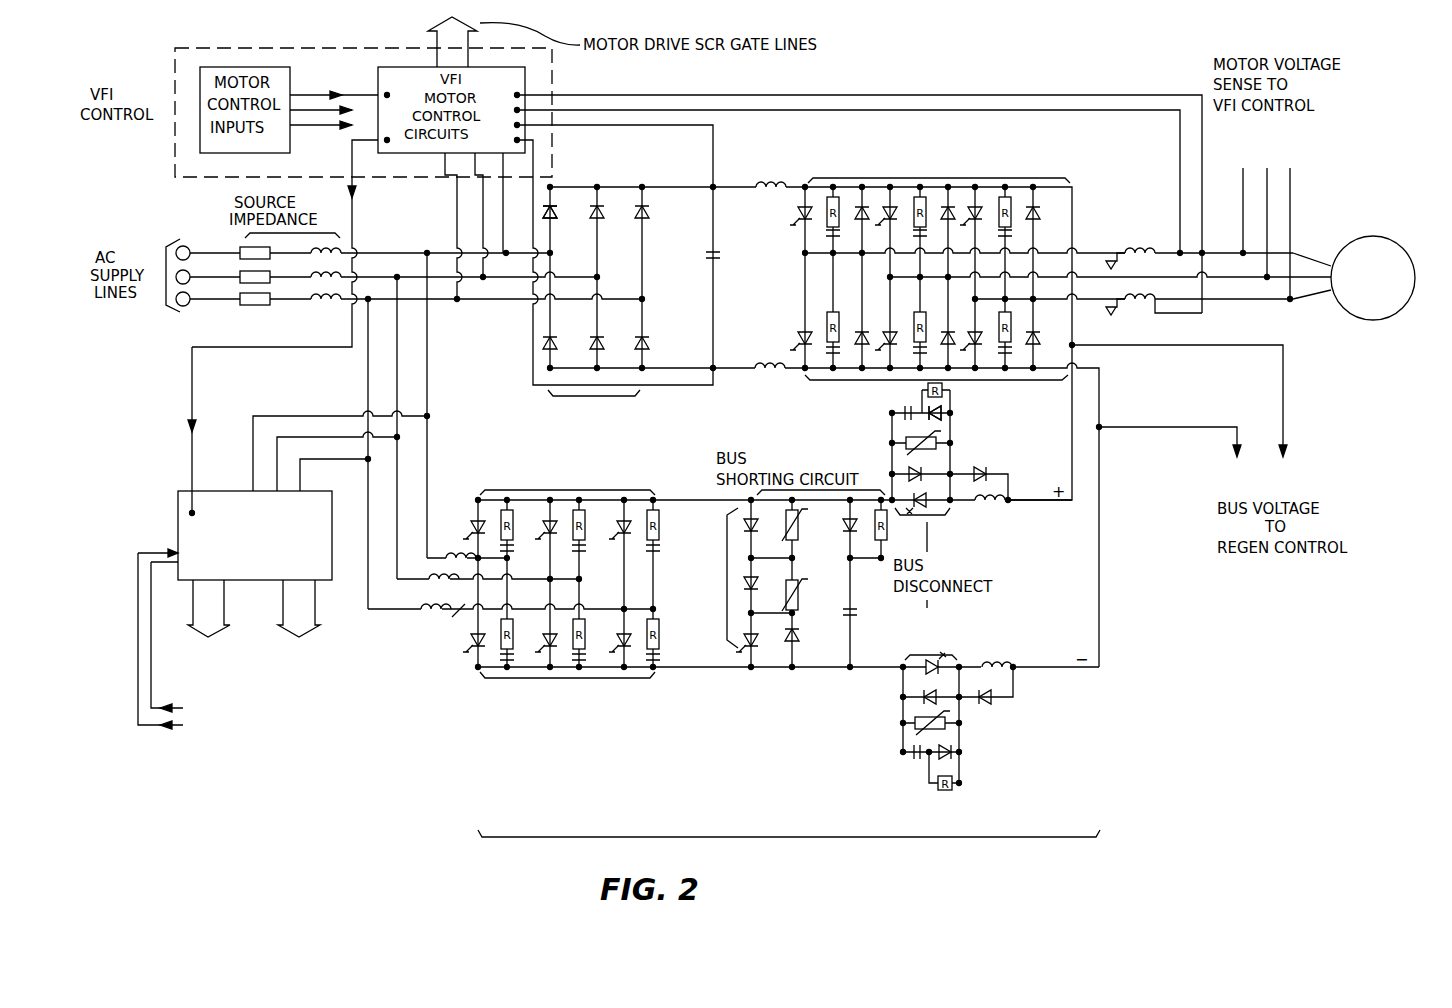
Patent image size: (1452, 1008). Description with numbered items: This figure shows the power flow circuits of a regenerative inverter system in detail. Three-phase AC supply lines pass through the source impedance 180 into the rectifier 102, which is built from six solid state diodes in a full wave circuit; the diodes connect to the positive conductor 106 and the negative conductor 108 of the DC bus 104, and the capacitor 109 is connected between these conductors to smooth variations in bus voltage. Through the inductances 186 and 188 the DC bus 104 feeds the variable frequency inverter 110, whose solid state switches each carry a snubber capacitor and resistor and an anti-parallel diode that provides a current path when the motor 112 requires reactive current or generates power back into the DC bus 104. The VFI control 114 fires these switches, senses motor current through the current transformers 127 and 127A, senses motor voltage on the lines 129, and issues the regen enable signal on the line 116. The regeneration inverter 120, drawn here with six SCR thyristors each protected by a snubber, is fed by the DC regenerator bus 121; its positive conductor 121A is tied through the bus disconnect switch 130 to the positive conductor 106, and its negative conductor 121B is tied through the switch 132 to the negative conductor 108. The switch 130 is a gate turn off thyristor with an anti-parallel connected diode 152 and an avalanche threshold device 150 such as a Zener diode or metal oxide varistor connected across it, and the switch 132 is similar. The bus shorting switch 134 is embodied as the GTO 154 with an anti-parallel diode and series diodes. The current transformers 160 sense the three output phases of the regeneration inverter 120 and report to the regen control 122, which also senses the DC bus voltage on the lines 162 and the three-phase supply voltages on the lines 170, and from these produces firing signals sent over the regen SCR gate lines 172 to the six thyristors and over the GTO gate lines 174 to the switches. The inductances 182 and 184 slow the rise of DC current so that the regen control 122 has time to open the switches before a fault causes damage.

The rectifier 102 is at (595, 421).
The DC bus 104 is at (688, 154).
The positive conductor 106 is at (575, 190).
The negative conductor 108 is at (733, 370).
The capacitor 109 is at (722, 258).
The variable frequency inverter 110 is at (972, 162).
The AC motor 112 is at (1366, 320).
The VFI control 114 is at (174, 148).
The regen enable line 116 is at (193, 388).
The regeneration inverter 120 is at (567, 697).
The DC regenerator bus 121 is at (818, 845).
The positive conductor of regenerator bus 121A is at (682, 669).
The negative conductor of regenerator bus 121B is at (688, 498).
The regen control 122 is at (176, 512).
The current transformer 127 is at (1208, 227).
The current transformer 127A is at (1133, 303).
The motor voltage sense lines 129 is at (1290, 172).
The bus disconnect switch 130 is at (935, 505).
The bus disconnect switch 132 is at (920, 655).
The bus shorting switch 134 is at (722, 568).
The avalanche threshold device 150 is at (930, 470).
The diode 152 is at (942, 438).
The GTO 154 is at (762, 637).
The current transformers 160 is at (450, 625).
The bus voltage lines 162 is at (262, 752).
The supply voltage sense lines 170 is at (280, 410).
The regen SCR gate lines 172 is at (237, 690).
The GTO gate lines 174 is at (320, 692).
The source impedance 180 is at (285, 243).
The inductance 182 is at (1000, 507).
The inductance 184 is at (1005, 660).
The inductance 186 is at (765, 182).
The inductance 188 is at (776, 362).